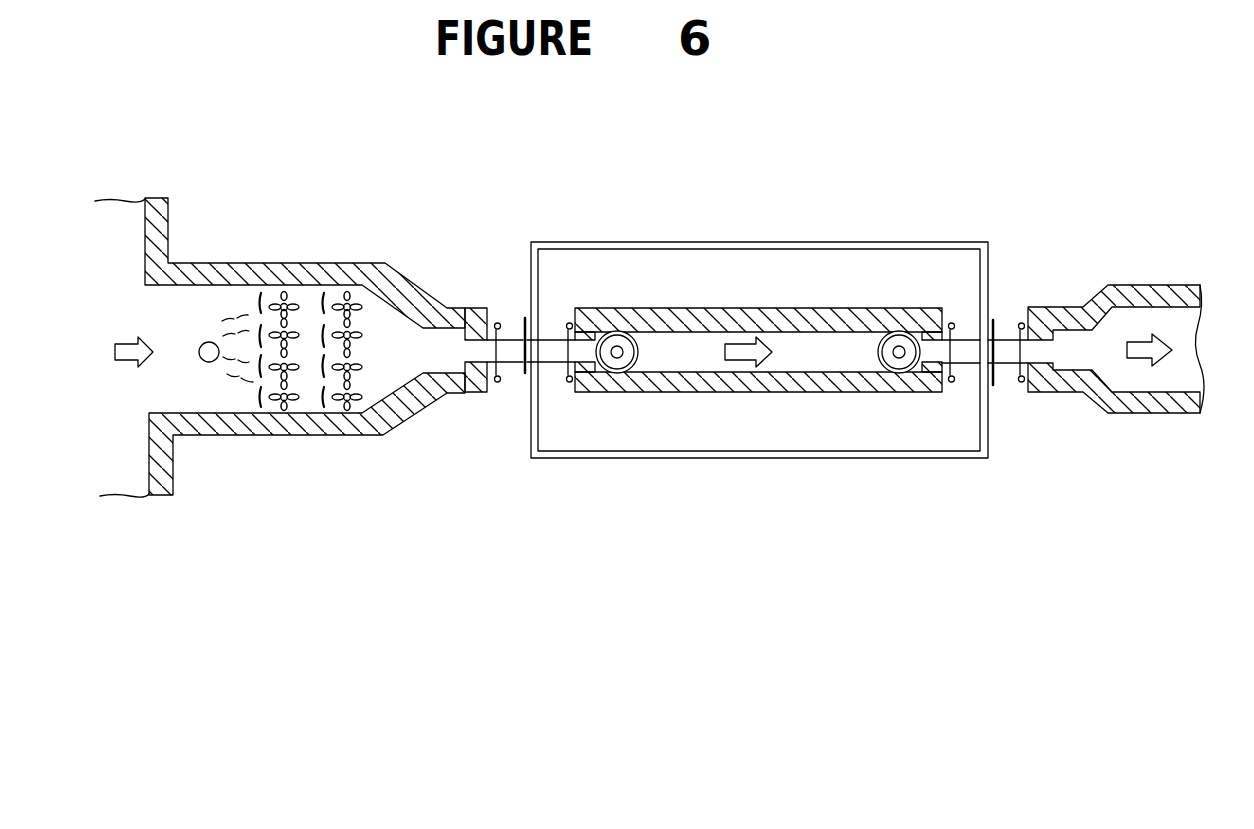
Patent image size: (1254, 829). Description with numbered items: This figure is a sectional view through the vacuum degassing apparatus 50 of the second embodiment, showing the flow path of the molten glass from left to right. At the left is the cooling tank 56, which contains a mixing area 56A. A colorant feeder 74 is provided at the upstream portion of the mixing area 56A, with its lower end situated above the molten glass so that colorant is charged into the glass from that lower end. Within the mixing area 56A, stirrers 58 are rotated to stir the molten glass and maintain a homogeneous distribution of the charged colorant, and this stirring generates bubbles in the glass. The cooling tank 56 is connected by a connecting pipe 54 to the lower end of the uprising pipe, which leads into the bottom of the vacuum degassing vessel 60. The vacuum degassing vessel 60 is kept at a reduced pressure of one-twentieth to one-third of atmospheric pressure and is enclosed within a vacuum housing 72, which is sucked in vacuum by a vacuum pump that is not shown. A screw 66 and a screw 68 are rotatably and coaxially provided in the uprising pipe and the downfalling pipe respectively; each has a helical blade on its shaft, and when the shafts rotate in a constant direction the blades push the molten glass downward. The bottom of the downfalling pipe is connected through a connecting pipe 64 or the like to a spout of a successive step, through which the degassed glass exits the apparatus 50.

The vacuum degassing apparatus 50 is at (807, 238).
The connecting pipe 54 is at (512, 366).
The cooling tank 56 is at (157, 192).
The mixing area 56A is at (290, 279).
The stirrers 58 is at (285, 302).
The vacuum degassing vessel 60 is at (877, 322).
The connecting pipe 64 is at (1000, 365).
The screw 66 is at (617, 358).
The screw 68 is at (899, 358).
The vacuum housing 72 is at (713, 242).
The colorant feeder 74 is at (209, 342).